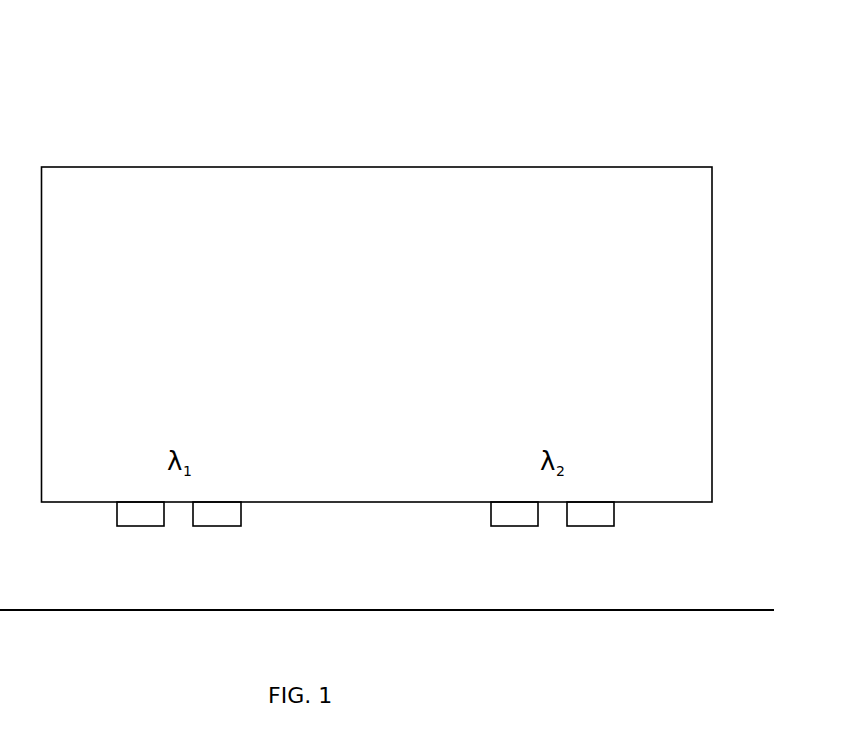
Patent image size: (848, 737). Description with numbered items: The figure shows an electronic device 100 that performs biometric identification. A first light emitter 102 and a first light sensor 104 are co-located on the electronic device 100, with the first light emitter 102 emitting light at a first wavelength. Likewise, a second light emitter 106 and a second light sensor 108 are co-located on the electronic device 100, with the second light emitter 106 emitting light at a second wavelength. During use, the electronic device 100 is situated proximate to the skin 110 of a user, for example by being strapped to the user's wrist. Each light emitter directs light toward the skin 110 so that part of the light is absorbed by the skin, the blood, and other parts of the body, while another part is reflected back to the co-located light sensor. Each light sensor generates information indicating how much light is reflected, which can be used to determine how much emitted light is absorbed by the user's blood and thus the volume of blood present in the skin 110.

The electronic device 100 is at (656, 131).
The first light emitter 102 is at (140, 526).
The first light sensor 104 is at (213, 526).
The second light emitter 106 is at (514, 526).
The second light sensor 108 is at (596, 526).
The skin 110 is at (694, 610).